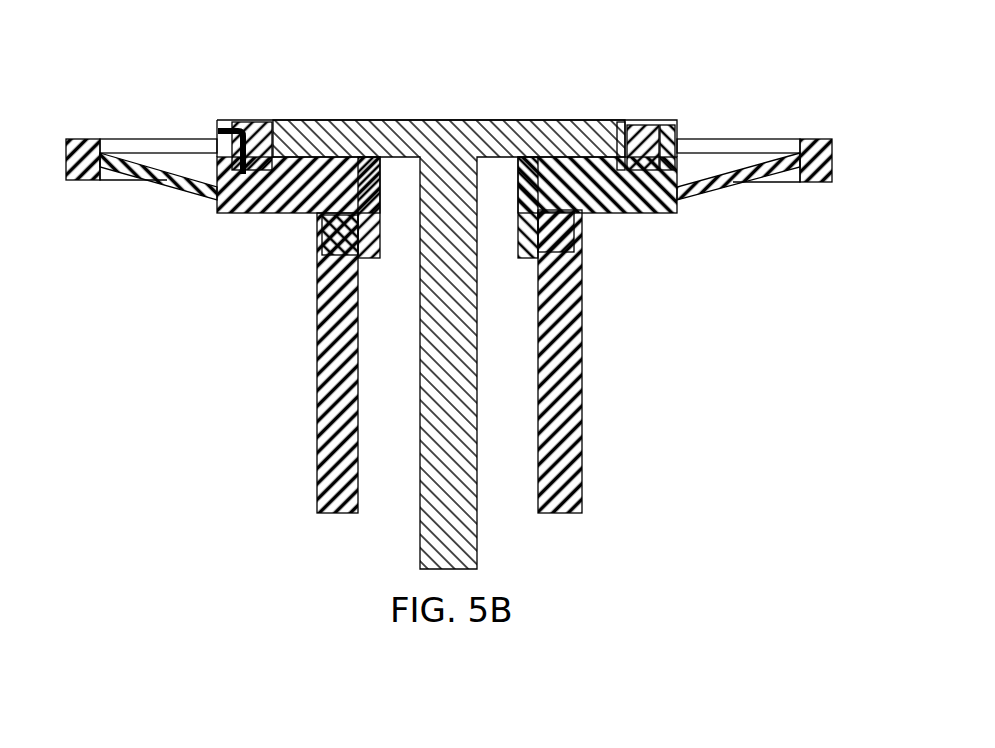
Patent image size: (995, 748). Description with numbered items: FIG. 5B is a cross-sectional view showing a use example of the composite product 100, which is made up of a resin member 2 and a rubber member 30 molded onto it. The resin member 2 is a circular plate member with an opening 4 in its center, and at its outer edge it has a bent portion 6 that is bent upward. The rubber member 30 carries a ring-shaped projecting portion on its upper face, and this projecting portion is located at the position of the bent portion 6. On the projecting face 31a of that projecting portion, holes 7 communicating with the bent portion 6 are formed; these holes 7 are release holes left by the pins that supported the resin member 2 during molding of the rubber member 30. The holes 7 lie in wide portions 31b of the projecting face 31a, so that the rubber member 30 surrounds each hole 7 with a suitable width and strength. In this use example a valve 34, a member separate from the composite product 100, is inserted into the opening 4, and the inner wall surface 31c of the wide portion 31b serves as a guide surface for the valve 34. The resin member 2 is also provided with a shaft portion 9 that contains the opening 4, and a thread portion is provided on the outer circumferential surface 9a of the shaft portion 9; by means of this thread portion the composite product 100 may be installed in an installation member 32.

The composite product 100 is at (527, 90).
The resin member 2 is at (678, 130).
The opening 4 is at (395, 188).
The bent portion 6 is at (222, 131).
The holes 7 is at (656, 125).
The shaft portion 9 is at (380, 220).
The outer circumferential surface 9a is at (353, 250).
The rubber member 30 is at (238, 213).
The projecting face 31a is at (258, 120).
The wide portion 31b is at (627, 128).
The inner wall surface 31c is at (592, 128).
The installation member 32 is at (335, 333).
The valve 34 is at (437, 127).